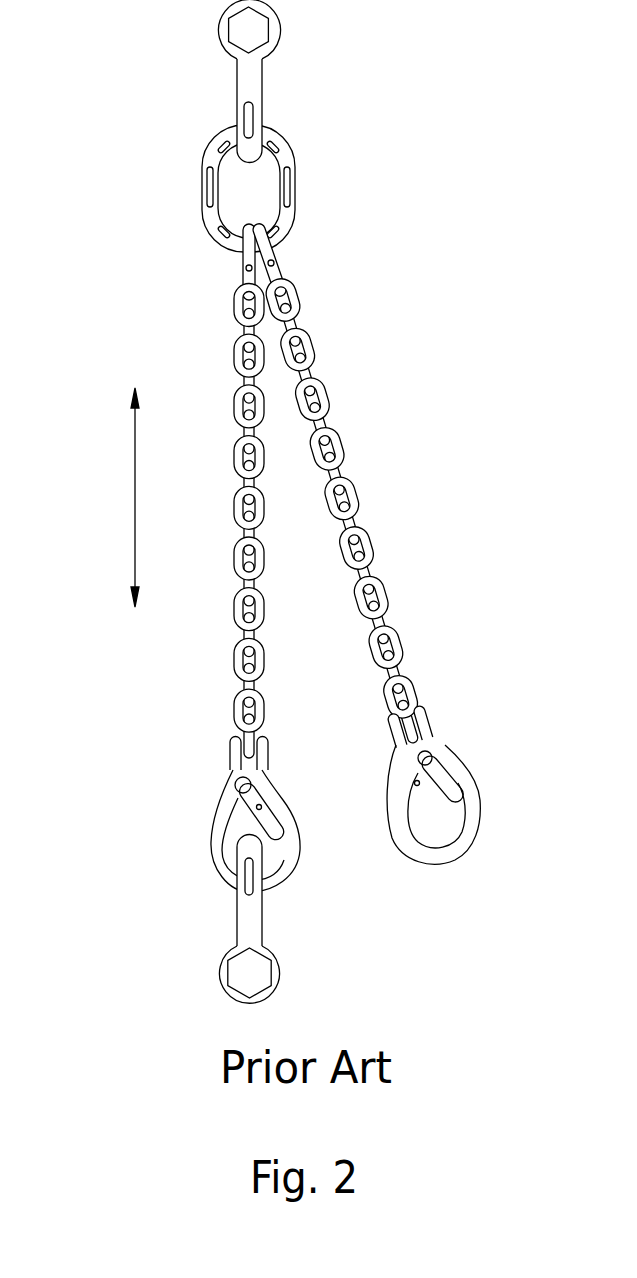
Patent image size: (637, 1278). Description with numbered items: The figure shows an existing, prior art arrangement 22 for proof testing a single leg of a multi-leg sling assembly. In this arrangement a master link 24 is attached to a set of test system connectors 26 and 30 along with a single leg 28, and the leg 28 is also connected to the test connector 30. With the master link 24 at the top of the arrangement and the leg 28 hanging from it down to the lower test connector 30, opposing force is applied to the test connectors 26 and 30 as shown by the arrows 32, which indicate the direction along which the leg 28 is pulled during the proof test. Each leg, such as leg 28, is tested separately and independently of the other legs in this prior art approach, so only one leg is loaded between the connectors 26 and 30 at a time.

The prior art arrangement 22 is at (122, 131).
The master link 24 is at (288, 181).
The test system connector 26 is at (273, 34).
The leg 28 is at (234, 355).
The test connector 30 is at (275, 971).
The arrows 32 is at (134, 502).